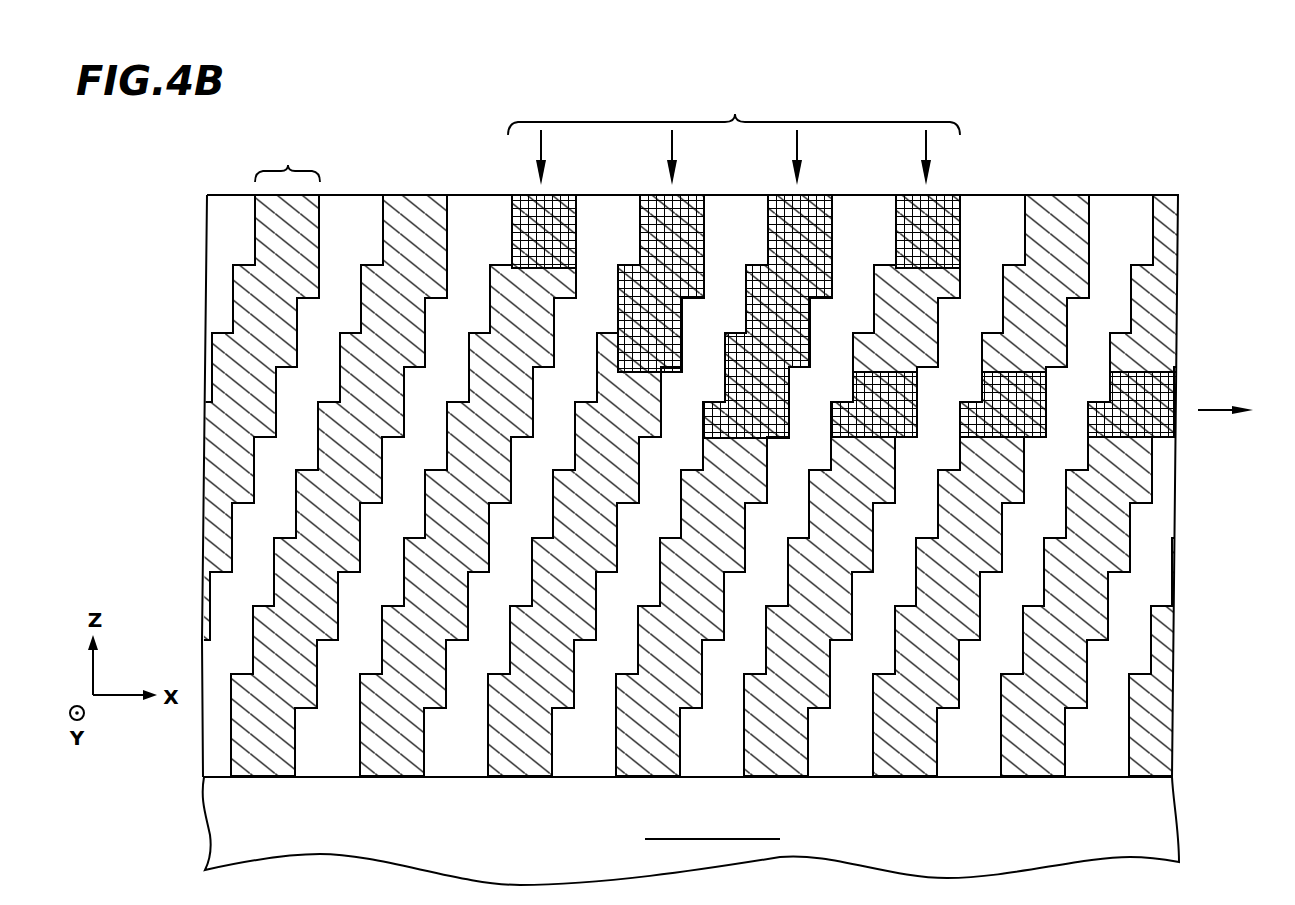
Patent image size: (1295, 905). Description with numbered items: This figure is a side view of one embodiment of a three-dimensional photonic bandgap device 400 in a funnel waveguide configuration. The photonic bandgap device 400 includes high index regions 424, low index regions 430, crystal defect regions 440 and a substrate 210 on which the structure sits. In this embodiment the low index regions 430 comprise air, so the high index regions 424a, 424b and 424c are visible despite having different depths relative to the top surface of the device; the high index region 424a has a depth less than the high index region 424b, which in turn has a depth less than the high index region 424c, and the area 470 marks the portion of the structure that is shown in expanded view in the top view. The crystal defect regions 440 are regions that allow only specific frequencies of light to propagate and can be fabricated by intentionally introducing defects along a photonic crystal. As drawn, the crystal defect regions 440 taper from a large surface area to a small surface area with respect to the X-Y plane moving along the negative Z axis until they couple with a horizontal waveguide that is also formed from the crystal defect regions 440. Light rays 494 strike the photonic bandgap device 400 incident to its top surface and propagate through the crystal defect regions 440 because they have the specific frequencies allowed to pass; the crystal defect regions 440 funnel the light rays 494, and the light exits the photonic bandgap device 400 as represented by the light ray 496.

The 3D PBG device 400 is at (1186, 137).
The substrate 210 is at (213, 810).
The high index regions 424 is at (690, 486).
The high index region 424a is at (308, 298).
The high index region 424b is at (294, 362).
The high index region 424c is at (264, 430).
The low index regions 430 is at (699, 485).
The crystal defect regions 440 is at (846, 316).
The area 470 is at (287, 160).
The light rays 494 is at (734, 138).
The light ray 496 is at (1215, 410).